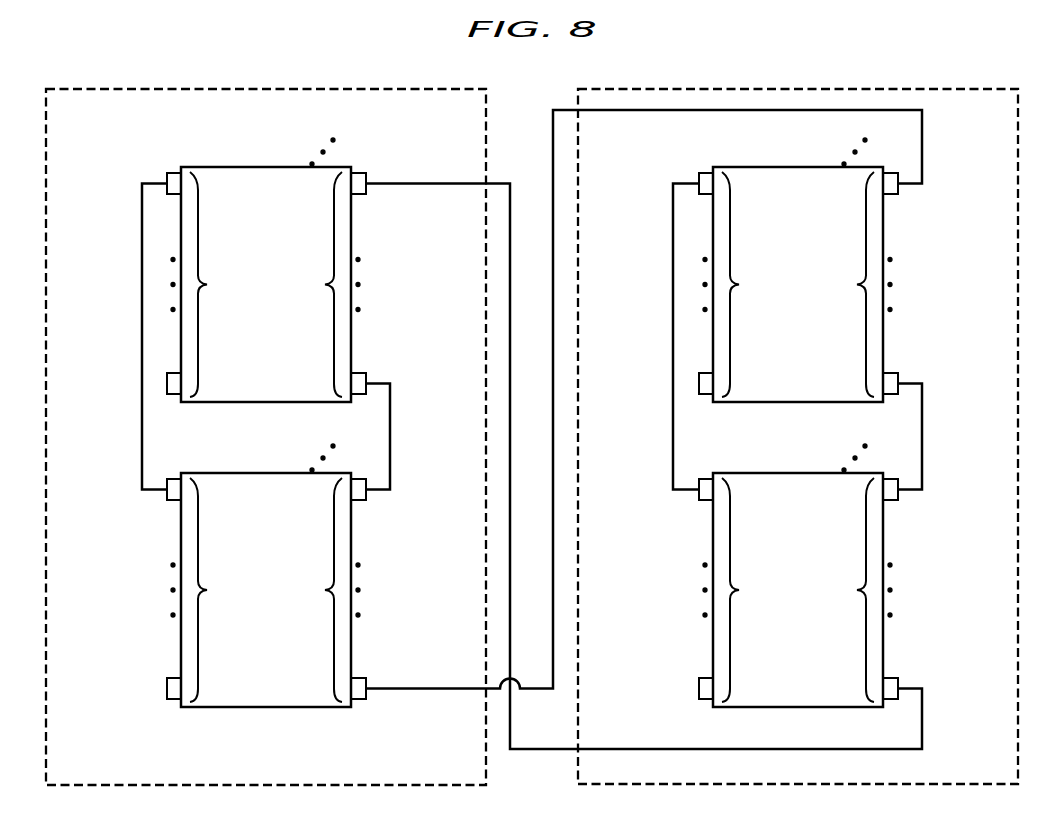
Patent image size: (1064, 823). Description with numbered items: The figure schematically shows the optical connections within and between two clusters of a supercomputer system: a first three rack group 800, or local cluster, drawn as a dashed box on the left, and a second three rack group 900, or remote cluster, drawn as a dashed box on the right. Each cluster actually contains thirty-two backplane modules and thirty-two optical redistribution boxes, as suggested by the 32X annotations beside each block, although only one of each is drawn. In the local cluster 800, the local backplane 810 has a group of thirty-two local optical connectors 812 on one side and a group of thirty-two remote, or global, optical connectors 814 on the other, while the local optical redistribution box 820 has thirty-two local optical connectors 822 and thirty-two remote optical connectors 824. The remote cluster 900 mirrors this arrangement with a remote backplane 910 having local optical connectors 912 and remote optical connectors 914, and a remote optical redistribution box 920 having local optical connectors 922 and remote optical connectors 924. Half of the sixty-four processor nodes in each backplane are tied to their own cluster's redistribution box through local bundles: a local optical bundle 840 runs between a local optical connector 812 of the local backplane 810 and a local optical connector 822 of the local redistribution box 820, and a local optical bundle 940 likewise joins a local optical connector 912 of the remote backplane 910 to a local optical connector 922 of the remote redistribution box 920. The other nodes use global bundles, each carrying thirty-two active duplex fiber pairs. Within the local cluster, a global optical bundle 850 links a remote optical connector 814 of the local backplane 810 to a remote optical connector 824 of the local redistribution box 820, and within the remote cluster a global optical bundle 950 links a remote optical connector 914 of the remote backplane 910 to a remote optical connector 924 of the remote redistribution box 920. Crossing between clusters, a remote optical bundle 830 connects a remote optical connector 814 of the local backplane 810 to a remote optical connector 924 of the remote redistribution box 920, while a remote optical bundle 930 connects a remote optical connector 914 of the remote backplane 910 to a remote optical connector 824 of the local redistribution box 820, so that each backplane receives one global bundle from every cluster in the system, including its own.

The first three rack group 800 is at (126, 80).
The second three rack group 900 is at (939, 80).
The local backplane module 810 is at (266, 590).
The local optical redistribution box 820 is at (266, 284).
The local optical connector 812 is at (208, 590).
The remote (global) optical connector 814 is at (324, 590).
The local optical connector 822 is at (208, 284).
The remote (global) optical connector 824 is at (324, 284).
The remote optical bundle 830 is at (424, 687).
The local optical bundle 840 is at (142, 336).
The global optical bundle 850 is at (390, 437).
The remote backplane module 910 is at (798, 590).
The remote optical redistribution box 920 is at (798, 284).
The local optical connector 912 is at (740, 590).
The remote (global) optical connector 914 is at (856, 590).
The local optical connector 922 is at (740, 284).
The remote (global) optical connector 924 is at (856, 284).
The remote optical bundle 930 is at (922, 718).
The local optical bundle 940 is at (673, 336).
The global optical bundle 950 is at (922, 438).
The 32 instances indicator 32X is at (605, 300).